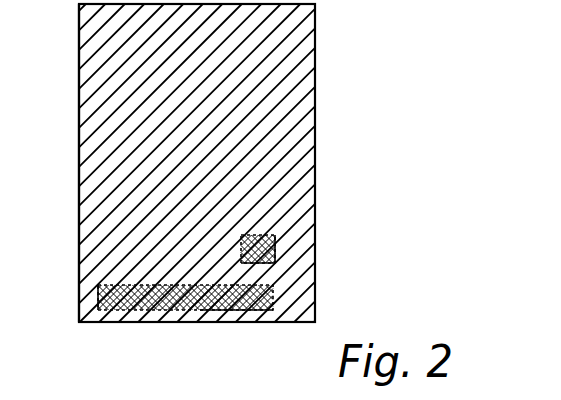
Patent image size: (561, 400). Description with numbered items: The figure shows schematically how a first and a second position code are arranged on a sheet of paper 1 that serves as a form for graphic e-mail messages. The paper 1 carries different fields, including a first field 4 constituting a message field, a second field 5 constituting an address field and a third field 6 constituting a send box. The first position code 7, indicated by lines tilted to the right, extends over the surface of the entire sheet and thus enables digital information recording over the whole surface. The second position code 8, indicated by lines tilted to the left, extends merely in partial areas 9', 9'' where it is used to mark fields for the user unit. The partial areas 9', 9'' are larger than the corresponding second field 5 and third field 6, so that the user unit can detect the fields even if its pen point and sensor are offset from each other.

The paper 1 is at (315, 167).
The first field 4 is at (105, 133).
The second field 5 is at (143, 322).
The third field 6 is at (276, 238).
The first position code 7 is at (270, 72).
The second position code 8 is at (223, 322).
The partial area 9' is at (58, 291).
The partial area 9'' is at (326, 259).